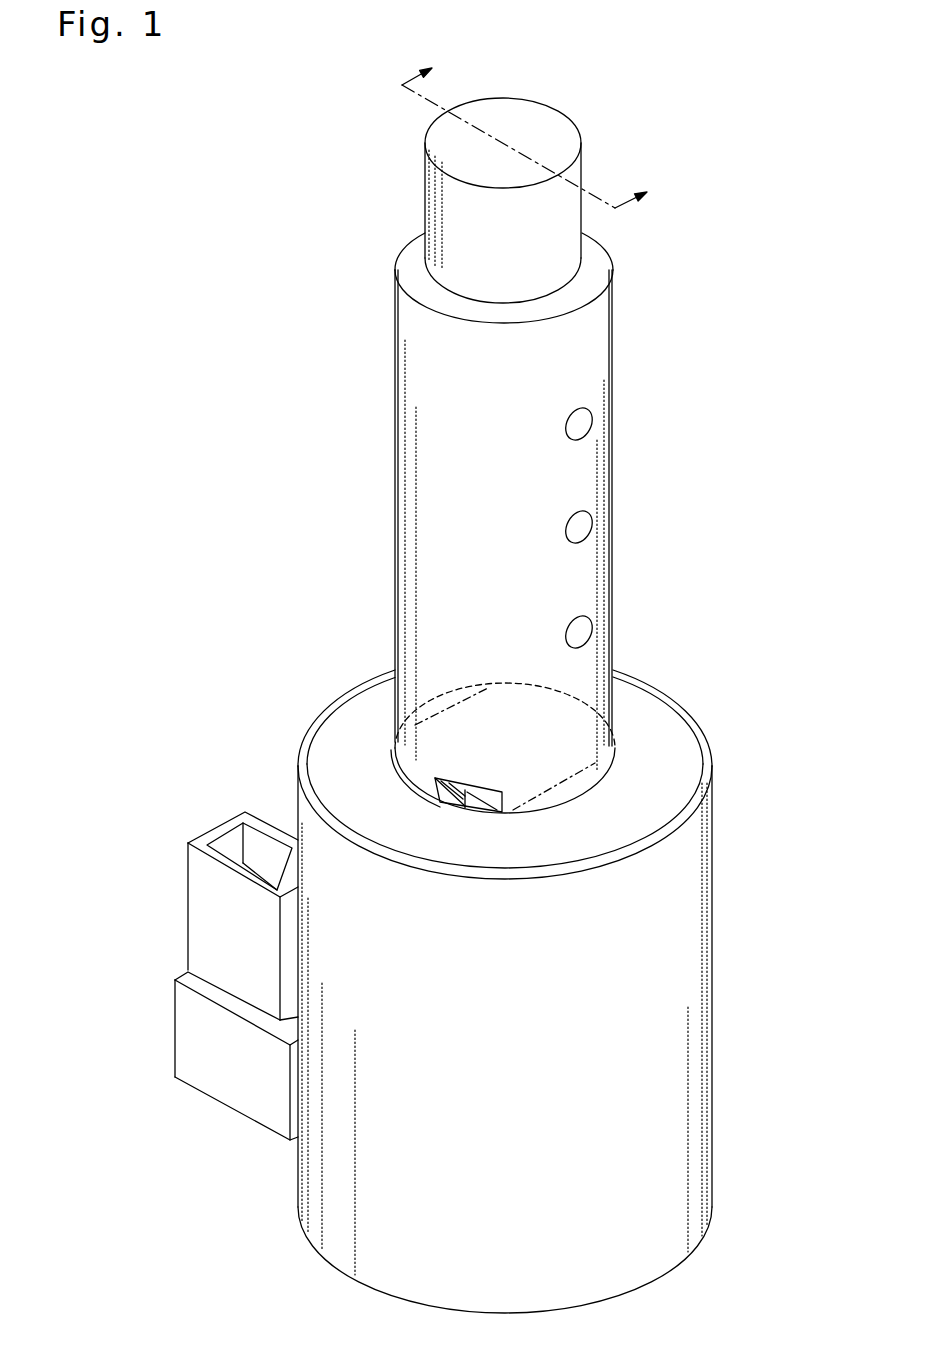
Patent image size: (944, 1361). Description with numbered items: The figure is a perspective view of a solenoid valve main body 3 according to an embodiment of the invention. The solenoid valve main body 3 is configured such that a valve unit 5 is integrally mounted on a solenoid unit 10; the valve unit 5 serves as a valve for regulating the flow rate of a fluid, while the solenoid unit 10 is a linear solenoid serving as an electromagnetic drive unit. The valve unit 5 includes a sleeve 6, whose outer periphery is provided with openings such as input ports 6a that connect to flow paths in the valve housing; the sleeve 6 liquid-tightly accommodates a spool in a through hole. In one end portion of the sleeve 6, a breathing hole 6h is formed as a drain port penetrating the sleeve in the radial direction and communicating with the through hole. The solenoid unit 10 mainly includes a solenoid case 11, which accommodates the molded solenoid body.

The solenoid valve main body 3 is at (306, 527).
The valve unit 5 is at (361, 606).
The sleeve 6 is at (588, 355).
The input ports 6a is at (593, 427).
The breathing hole 6h is at (437, 797).
The solenoid unit 10 is at (740, 1025).
The solenoid case 11 is at (667, 907).